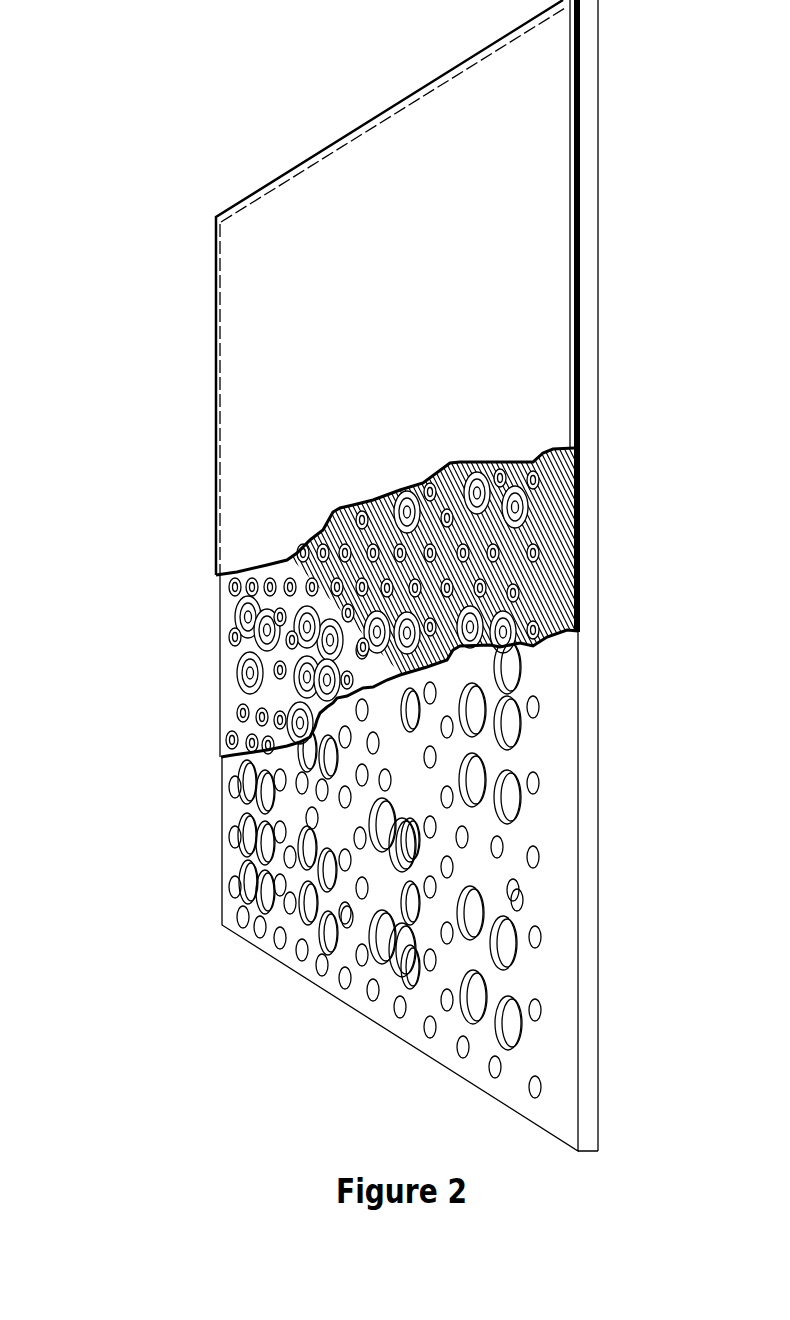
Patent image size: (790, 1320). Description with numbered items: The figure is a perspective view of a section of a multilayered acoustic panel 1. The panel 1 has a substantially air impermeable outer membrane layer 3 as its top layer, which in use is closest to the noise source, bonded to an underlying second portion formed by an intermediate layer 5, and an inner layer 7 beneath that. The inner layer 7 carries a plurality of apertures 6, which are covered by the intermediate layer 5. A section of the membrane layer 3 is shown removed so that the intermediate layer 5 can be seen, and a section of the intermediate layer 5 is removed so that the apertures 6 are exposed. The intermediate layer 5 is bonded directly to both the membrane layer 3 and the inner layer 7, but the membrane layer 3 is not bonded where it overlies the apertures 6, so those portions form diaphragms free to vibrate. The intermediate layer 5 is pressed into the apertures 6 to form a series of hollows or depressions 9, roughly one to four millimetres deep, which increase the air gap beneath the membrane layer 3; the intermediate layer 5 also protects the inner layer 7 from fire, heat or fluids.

The multilayered acoustic panel 1 is at (156, 408).
The membrane layer 3 is at (240, 287).
The intermediate layer 5 is at (562, 613).
The apertures 6 is at (473, 993).
The inner layer 7 is at (566, 972).
The depressions 9 is at (247, 680).